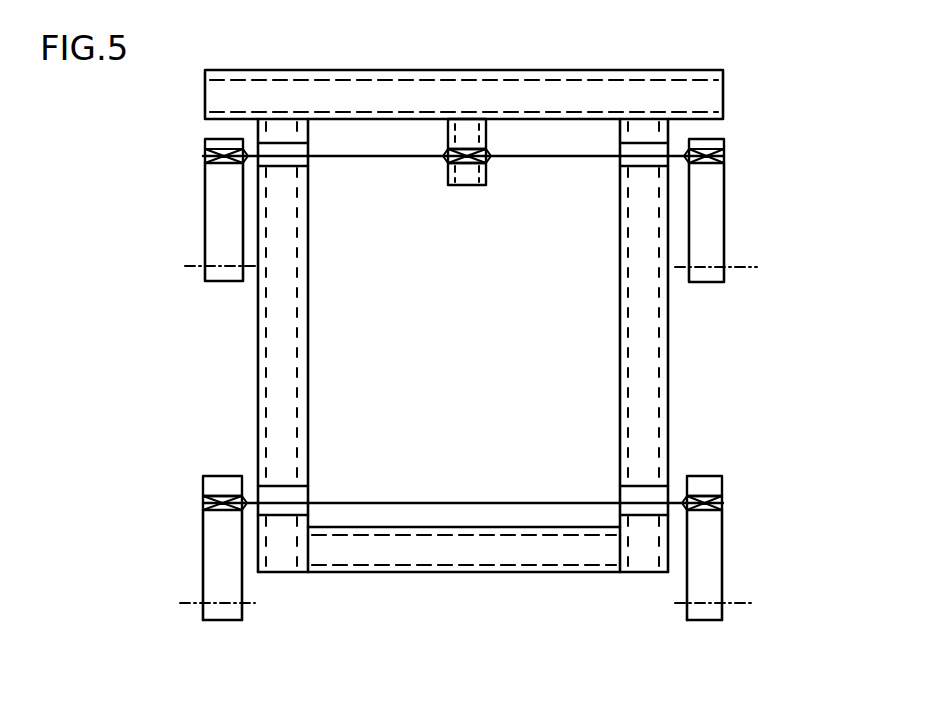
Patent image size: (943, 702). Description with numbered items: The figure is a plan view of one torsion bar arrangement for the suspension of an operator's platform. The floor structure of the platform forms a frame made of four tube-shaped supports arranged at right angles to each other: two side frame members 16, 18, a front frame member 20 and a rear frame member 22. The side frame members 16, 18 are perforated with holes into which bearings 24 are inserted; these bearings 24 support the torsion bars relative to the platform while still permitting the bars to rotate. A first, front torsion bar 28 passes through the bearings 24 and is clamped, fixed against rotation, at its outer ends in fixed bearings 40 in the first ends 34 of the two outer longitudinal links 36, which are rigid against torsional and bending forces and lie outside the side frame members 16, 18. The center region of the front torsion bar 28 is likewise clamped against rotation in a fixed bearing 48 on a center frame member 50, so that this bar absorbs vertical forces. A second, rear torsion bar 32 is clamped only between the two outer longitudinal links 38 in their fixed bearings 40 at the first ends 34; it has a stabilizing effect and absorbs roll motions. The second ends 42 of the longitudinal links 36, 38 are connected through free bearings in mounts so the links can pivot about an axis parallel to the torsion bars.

The side frame member 16 is at (288, 337).
The side frame member 18 is at (643, 302).
The front frame member 20 is at (475, 95).
The rear frame member 22 is at (447, 558).
The bearing 24 is at (300, 162).
The front torsion bar 28 is at (408, 158).
The rear torsion bar 32 is at (417, 500).
The first end of longitudinal link 34 is at (217, 483).
The longitudinal link 36 is at (218, 208).
The longitudinal link 38 is at (213, 548).
The fixed bearing 40 is at (205, 156).
The second end of longitudinal link 42 is at (212, 612).
The fixed bearing 48 is at (488, 166).
The center frame member 50 is at (462, 135).